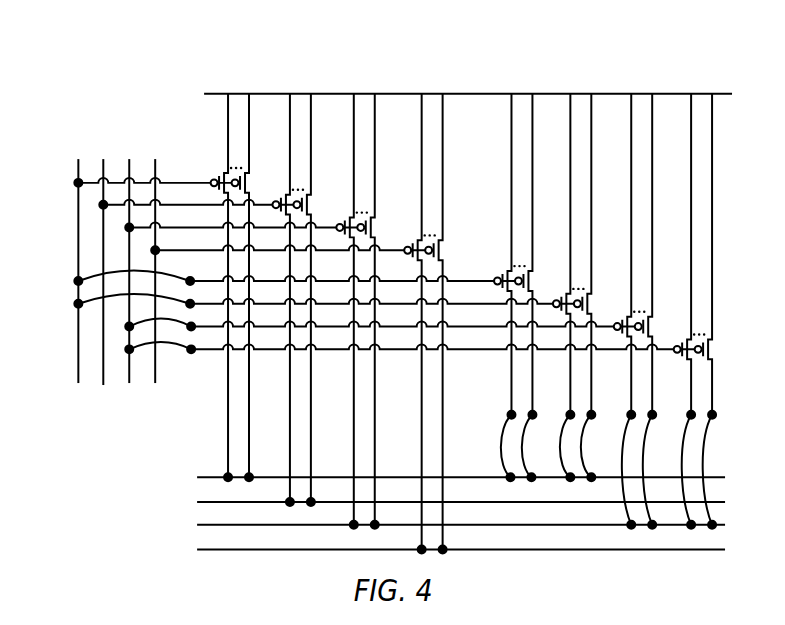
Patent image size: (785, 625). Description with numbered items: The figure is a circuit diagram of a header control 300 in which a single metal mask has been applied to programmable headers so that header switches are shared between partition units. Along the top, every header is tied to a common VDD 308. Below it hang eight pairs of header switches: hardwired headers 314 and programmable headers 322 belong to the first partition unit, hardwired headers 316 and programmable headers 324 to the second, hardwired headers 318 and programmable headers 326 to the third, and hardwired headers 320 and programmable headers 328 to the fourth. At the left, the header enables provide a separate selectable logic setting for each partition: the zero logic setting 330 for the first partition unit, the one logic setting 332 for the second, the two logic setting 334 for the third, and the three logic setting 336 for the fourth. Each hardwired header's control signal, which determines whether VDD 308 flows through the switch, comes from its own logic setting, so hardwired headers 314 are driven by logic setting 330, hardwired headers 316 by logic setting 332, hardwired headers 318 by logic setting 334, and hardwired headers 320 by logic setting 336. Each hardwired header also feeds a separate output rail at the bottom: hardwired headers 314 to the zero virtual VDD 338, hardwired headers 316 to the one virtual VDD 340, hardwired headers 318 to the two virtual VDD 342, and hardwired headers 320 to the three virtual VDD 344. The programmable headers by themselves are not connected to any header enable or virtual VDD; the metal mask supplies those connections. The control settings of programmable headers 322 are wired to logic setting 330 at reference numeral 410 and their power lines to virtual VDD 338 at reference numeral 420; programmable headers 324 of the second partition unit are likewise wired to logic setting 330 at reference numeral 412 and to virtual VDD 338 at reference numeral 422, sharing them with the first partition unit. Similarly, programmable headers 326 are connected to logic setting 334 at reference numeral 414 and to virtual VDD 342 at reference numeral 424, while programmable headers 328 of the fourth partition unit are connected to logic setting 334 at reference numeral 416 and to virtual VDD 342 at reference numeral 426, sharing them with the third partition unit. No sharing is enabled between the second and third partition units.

The header control 300 is at (400, 295).
The VDD 308 is at (475, 91).
The hardwired headers 314 is at (237, 91).
The hardwired headers 316 is at (300, 91).
The hardwired headers 318 is at (363, 91).
The hardwired headers 320 is at (433, 91).
The programmable headers 322 is at (523, 91).
The programmable headers 324 is at (580, 91).
The programmable headers 326 is at (643, 91).
The programmable headers 328 is at (702, 91).
The logic setting 0 330 is at (77, 383).
The logic setting 1 332 is at (102, 385).
The logic setting 2 334 is at (128, 383).
The logic setting 3 336 is at (154, 383).
The virtual VDD 0 338 is at (725, 478).
The virtual VDD 1 340 is at (725, 503).
The virtual VDD 2 342 is at (725, 526).
The virtual VDD 3 344 is at (725, 551).
The connection of programmable headers 322 control settings to logic setting 0 410 is at (77, 281).
The connection of programmable headers 324 control settings to logic setting 0 412 is at (77, 304).
The connection of programmable headers 326 control settings to logic setting 2 414 is at (120, 329).
The connection of programmable headers 328 control settings to logic setting 2 416 is at (120, 350).
The connection of programmable headers 322 power lines to virtual VDD 0 420 is at (522, 487).
The connection of programmable headers 324 power lines to virtual VDD 0 422 is at (582, 487).
The connection of programmable headers 326 power lines to virtual VDD 2 424 is at (643, 540).
The connection of programmable headers 328 power lines to virtual VDD 2 426 is at (703, 540).